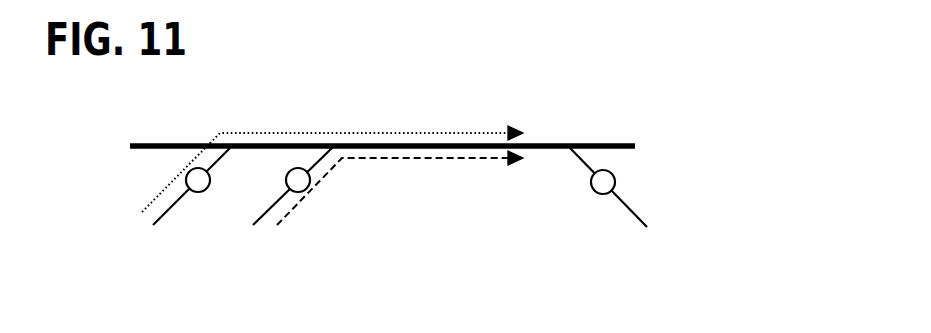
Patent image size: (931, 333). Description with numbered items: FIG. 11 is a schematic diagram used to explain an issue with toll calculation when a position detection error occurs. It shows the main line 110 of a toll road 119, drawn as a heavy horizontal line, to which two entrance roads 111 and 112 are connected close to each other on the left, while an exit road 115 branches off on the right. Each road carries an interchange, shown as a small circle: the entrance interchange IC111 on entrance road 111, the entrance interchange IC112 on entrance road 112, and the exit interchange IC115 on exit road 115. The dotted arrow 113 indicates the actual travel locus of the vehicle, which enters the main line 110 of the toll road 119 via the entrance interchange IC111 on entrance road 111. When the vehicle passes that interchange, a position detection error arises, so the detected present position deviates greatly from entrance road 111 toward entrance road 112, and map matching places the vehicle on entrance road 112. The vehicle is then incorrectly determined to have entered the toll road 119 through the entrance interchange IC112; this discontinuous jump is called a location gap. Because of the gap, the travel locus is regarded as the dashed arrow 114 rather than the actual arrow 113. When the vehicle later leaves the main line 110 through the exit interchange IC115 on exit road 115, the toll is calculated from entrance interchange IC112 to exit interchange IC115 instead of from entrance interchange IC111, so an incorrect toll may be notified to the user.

The main line 110 is at (603, 144).
The entrance road 111 is at (162, 219).
The entrance road 112 is at (259, 221).
The arrow 113 is at (401, 132).
The arrow 114 is at (460, 159).
The exit road 115 is at (640, 222).
The toll road 119 is at (682, 90).
The first integrated circuit IC111 is at (186, 180).
The second integrated circuit IC112 is at (310, 181).
The third integrated circuit IC115 is at (615, 182).